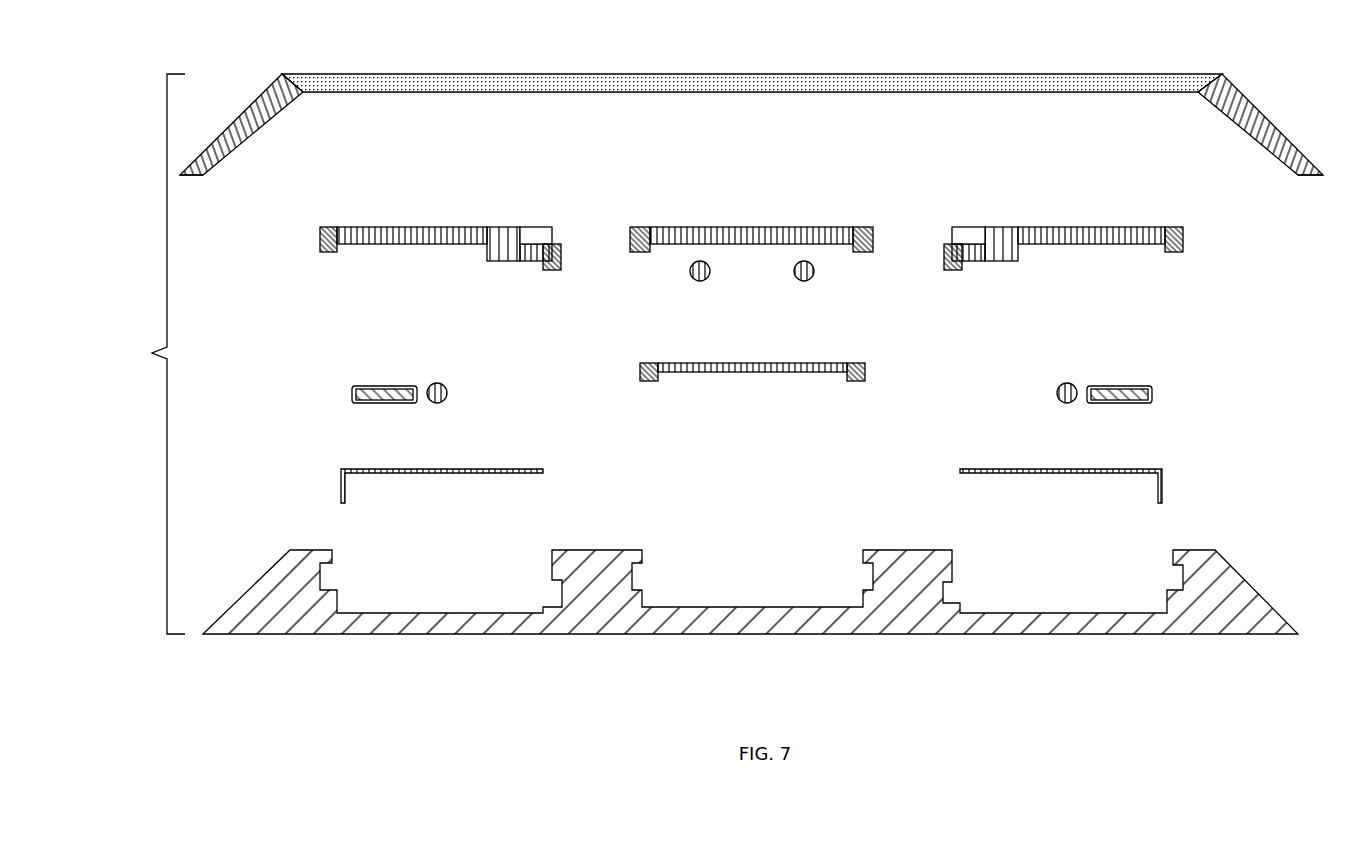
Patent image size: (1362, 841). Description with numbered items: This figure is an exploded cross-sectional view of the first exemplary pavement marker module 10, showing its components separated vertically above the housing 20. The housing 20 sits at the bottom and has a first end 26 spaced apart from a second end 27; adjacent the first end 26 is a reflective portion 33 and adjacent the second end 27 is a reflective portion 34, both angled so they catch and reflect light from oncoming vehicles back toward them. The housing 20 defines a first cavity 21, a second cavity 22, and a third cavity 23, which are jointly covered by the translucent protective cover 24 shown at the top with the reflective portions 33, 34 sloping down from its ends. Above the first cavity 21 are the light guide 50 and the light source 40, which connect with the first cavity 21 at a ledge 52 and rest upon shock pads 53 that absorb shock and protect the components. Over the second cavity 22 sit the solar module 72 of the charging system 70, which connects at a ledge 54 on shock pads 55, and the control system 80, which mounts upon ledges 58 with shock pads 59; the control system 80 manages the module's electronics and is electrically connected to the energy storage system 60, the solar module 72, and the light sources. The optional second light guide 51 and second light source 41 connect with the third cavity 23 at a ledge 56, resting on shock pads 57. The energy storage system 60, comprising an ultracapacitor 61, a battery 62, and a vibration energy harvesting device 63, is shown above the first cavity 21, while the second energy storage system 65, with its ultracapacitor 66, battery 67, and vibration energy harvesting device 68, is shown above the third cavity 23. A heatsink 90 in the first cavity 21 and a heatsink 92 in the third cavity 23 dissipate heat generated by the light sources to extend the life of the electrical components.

The pavement marker module 10 is at (156, 354).
The housing 20 is at (1220, 562).
The first cavity 21 is at (441, 574).
The second cavity 22 is at (757, 572).
The third cavity 23 is at (1062, 574).
The protective cover 24 is at (719, 74).
The first end 26 is at (180, 178).
The second end 27 is at (1323, 178).
The reflective portion 33 is at (272, 116).
The reflective portion 34 is at (1238, 123).
The light source 40 is at (538, 232).
The second light source 41 is at (969, 232).
The light guide 50 is at (431, 228).
The second light guide 51 is at (1065, 230).
The ledge 52 is at (337, 590).
The shock pad 53 is at (331, 253).
The ledge 54 is at (652, 580).
The shock pad 55 is at (635, 227).
The ledge 56 is at (957, 604).
The shock pad 57 is at (949, 271).
The ledge 58 is at (654, 607).
The shock pad 59 is at (648, 381).
The energy storage system 60 is at (338, 393).
The ultracapacitor 61 is at (437, 404).
The battery 62 is at (385, 399).
The vibration energy harvesting device 63 is at (700, 282).
The second energy storage system 65 is at (1166, 393).
The ultracapacitor 66 is at (1067, 404).
The battery 67 is at (1115, 399).
The vibration energy harvesting device 68 is at (804, 282).
The charging system 70 is at (652, 279).
The solar module 72 is at (758, 236).
The control system 80 is at (748, 363).
The heatsink 90 is at (497, 469).
The heatsink 92 is at (1006, 469).